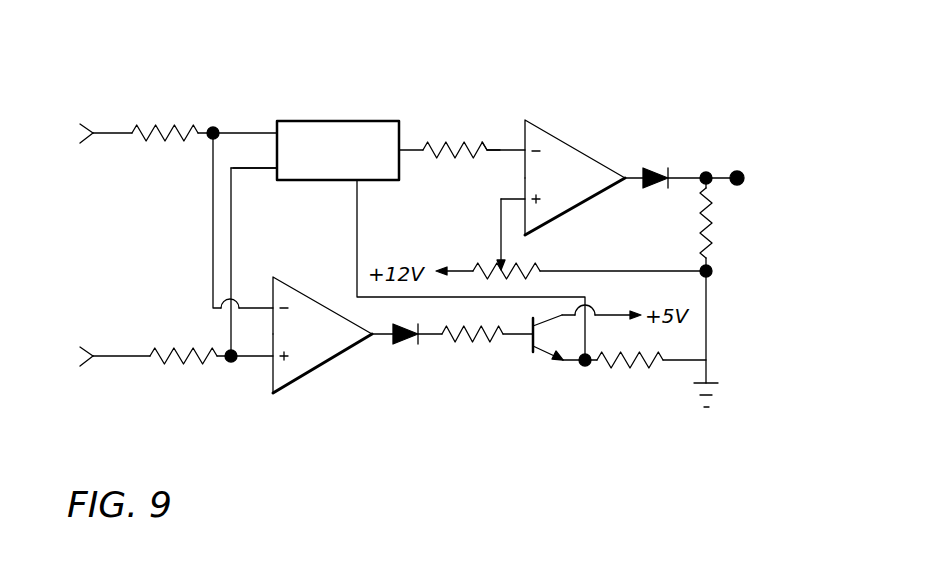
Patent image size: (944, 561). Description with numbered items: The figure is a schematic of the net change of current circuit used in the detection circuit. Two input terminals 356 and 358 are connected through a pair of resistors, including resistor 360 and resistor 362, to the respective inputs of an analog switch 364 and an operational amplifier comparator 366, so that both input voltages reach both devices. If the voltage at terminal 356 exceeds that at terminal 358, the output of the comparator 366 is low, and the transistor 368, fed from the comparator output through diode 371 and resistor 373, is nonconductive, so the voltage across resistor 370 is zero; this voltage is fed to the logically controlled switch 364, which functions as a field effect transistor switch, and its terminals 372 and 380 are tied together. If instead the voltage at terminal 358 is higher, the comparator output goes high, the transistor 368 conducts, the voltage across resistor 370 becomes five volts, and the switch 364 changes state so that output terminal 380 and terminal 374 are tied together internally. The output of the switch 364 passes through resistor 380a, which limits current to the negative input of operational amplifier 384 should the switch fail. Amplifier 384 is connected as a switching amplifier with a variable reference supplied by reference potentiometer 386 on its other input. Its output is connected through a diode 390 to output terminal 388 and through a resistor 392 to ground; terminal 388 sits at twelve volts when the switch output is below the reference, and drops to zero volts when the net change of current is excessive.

The terminal 356 is at (92, 133).
The resistor 360 is at (165, 133).
The terminal of the switch 372 is at (276, 133).
The analog switch 364 is at (305, 121).
The terminal 374 is at (275, 172).
The output terminal of switch 380 is at (402, 150).
The resistor 380a is at (472, 148).
The operational amplifier 384 is at (566, 138).
The diode 390 is at (651, 170).
The output terminal 388 is at (740, 172).
The resistor 392 is at (707, 232).
The reference potentiometer 386 is at (478, 266).
The terminal 358 is at (93, 356).
The input resistor 362 is at (175, 360).
The operational amplifier comparator 366 is at (318, 366).
The diode 371 is at (403, 345).
The base resistor 373 is at (466, 343).
The transistor 368 is at (528, 338).
The resistor 370 is at (619, 364).